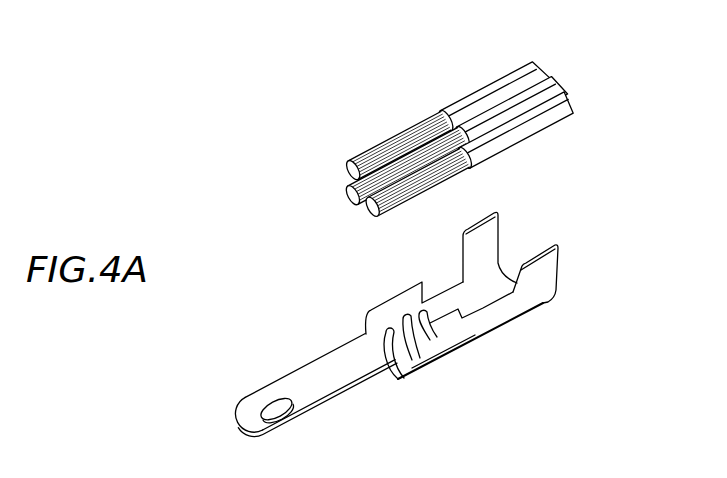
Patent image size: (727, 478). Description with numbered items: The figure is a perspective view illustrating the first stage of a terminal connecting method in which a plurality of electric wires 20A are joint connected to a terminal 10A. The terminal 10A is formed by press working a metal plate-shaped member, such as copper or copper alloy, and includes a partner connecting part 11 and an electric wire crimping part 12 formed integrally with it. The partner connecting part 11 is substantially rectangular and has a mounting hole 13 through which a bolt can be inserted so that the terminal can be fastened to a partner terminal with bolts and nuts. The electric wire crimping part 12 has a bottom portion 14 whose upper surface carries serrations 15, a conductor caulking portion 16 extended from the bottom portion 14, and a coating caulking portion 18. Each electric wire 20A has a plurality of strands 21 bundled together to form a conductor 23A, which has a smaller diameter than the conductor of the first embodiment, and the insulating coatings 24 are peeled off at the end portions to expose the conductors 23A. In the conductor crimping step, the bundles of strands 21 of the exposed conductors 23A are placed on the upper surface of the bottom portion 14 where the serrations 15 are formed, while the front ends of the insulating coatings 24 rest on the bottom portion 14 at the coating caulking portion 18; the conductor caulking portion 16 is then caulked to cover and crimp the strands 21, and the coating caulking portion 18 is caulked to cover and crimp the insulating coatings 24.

The terminal 10A is at (397, 338).
The partner connecting part 11 is at (272, 392).
The electric wire crimping part 12 is at (450, 295).
The mounting hole 13 is at (292, 418).
The bottom portion 14 is at (478, 312).
The serrations 15 is at (382, 344).
The conductor caulking portion 16 is at (390, 322).
The coating caulking portion 18 is at (460, 279).
The electric wire 20A is at (423, 165).
The strands 21 is at (345, 170).
The conductor 23A is at (406, 130).
The insulating coating 24 is at (506, 140).